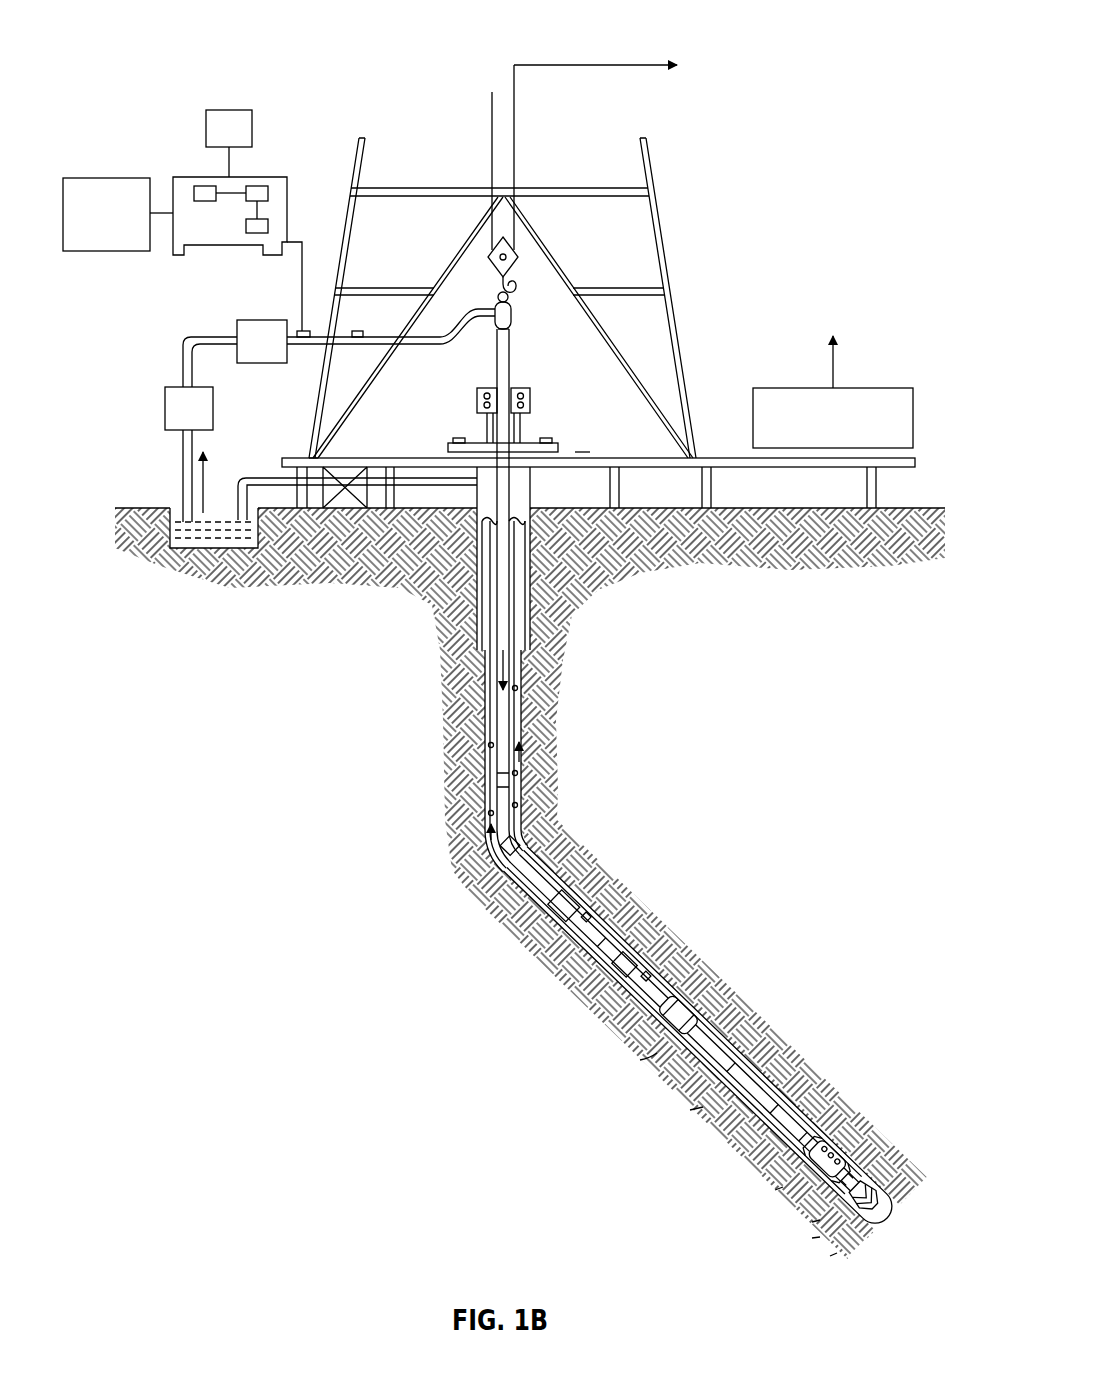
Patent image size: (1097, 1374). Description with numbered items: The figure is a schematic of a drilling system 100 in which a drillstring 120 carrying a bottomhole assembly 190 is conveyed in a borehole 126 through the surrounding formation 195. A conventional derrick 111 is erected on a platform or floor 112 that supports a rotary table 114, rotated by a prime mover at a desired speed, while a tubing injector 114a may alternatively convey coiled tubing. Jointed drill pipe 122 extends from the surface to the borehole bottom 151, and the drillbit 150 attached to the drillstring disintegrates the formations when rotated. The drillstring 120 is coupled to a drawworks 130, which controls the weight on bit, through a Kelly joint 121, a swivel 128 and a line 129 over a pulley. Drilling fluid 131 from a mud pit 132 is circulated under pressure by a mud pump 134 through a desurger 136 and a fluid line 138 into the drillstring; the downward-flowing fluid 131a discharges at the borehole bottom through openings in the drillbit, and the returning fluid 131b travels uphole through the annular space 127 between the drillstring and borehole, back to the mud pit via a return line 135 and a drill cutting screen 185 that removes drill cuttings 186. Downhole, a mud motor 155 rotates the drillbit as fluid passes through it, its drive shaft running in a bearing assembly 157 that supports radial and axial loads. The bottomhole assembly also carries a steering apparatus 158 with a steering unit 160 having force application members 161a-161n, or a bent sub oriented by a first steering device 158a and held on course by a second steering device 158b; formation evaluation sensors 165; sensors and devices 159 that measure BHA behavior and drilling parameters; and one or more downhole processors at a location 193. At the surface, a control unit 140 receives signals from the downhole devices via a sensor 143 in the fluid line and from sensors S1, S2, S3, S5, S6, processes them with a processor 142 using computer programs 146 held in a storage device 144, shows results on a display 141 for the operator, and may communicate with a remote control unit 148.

The drilling system 100 is at (548, 687).
The derrick 111 is at (675, 307).
The platform or floor 112 is at (698, 453).
The rotary table 114 is at (538, 440).
The tubing injector 114a is at (533, 400).
The drillstring 120 is at (552, 727).
The Kelly joint 121 is at (512, 376).
The drill pipe 122 is at (487, 735).
The borehole 126 is at (524, 818).
The annular space 127 is at (522, 845).
The swivel 128 is at (490, 331).
The line 129 is at (522, 162).
The drawworks 130 is at (853, 387).
The drilling fluid 131 is at (180, 540).
The drilling fluid 131a is at (490, 660).
The returning drilling fluid 131b is at (490, 846).
The source of drilling fluid 132 is at (200, 528).
The mud pump 134 is at (165, 408).
The return line 135 is at (408, 535).
The desurger 136 is at (237, 335).
The fluid line 138 is at (318, 348).
The surface control unit 140 is at (206, 176).
The display/monitor 141 is at (228, 109).
The processor 142 is at (205, 186).
The sensor 143 is at (300, 331).
The storage device 144 is at (258, 186).
The computer programs 146 is at (258, 234).
The remote control unit 148 is at (130, 177).
The drillbit 150 is at (897, 1180).
The borehole bottom 151 is at (837, 1253).
The downhole motor 155 is at (613, 920).
The bearing assembly 157 is at (868, 1100).
The steering apparatus 158 is at (857, 1121).
The first steering device 158a is at (820, 1237).
The second steering device 158b is at (820, 1220).
The sensors and devices 159 is at (877, 1148).
The steering unit 160 is at (783, 1187).
The force application members 161a-161n is at (817, 1148).
The formation evaluation sensors 165 is at (703, 1107).
The drill cutting screen 185 is at (340, 457).
The drill cuttings 186 is at (519, 690).
The bottomhole assembly 190 is at (700, 1028).
The downhole processor location 193 is at (657, 1053).
The formation 195 is at (812, 925).
The sensor S1 is at (358, 330).
The sensor S2 is at (590, 452).
The sensor S3 is at (458, 440).
The sensor S5 is at (513, 340).
The sensor S6 is at (512, 297).